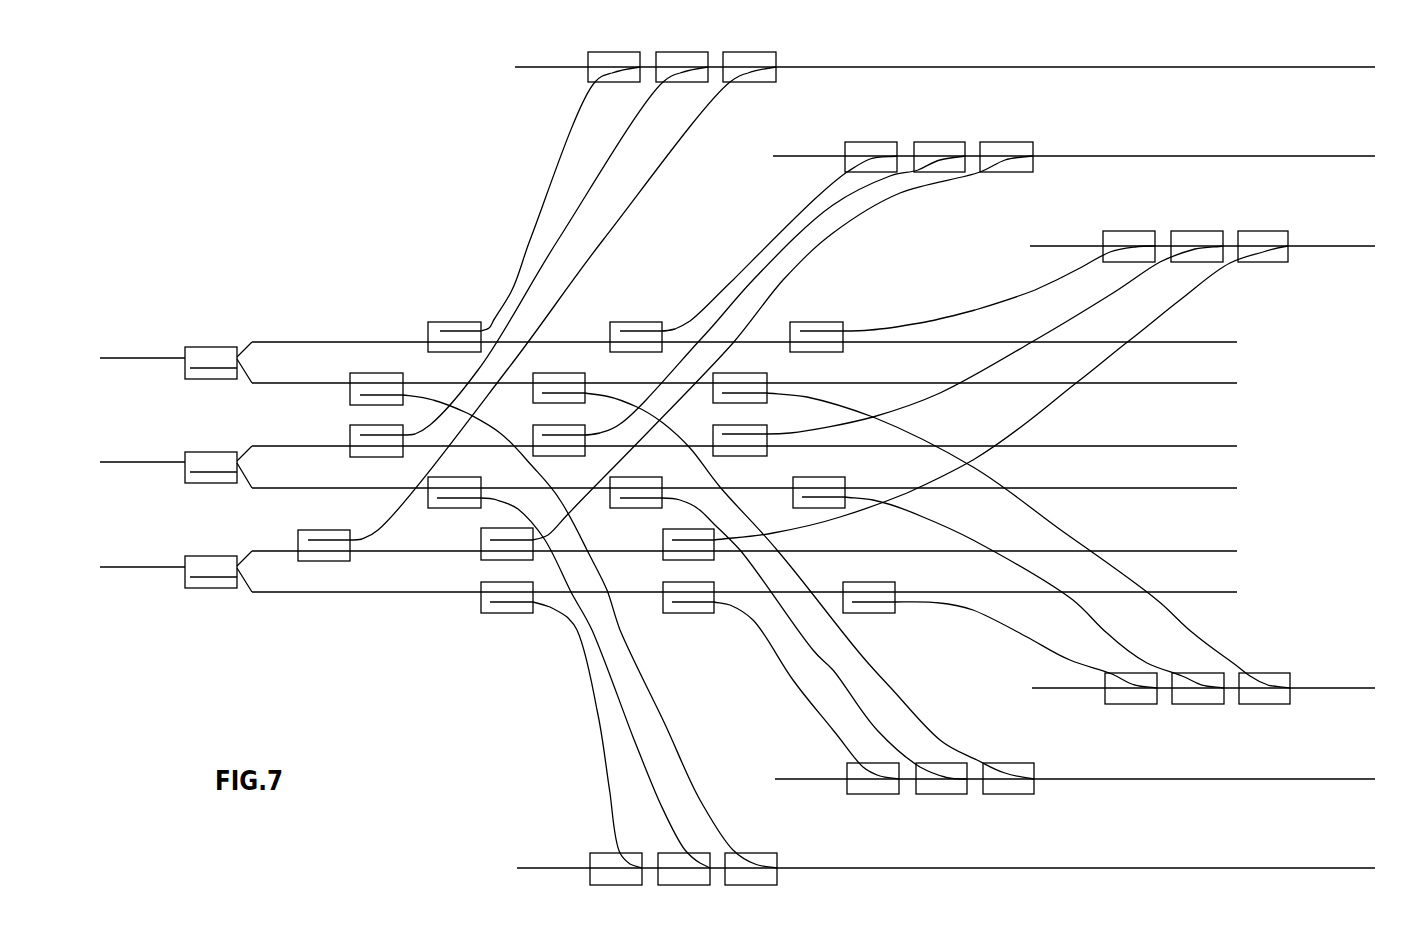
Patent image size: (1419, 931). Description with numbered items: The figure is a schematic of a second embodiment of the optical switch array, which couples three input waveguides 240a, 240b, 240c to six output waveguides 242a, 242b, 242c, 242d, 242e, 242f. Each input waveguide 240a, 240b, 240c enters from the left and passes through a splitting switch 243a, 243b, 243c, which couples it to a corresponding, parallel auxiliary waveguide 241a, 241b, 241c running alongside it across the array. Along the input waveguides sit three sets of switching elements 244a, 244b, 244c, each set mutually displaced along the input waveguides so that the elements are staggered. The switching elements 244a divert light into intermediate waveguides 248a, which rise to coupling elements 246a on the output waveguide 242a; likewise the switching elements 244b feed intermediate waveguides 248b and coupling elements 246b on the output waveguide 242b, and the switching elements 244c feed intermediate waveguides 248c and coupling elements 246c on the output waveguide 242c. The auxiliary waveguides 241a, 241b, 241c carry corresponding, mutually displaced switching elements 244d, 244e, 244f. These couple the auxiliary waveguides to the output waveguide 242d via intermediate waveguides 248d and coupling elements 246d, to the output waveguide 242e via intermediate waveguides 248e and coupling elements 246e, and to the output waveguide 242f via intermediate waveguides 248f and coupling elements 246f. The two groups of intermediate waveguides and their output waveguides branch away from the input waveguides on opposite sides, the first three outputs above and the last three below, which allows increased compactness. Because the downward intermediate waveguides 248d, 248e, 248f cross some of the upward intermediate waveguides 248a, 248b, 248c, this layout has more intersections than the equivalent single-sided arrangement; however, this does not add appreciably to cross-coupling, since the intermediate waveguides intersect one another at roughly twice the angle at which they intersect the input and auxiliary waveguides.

The input waveguide 240a is at (132, 357).
The input waveguide 240b is at (132, 461).
The input waveguide 240c is at (133, 566).
The splitting switch 243a is at (213, 346).
The splitting switch 243b is at (213, 451).
The splitting switch 243c is at (213, 555).
The auxiliary waveguide 241a is at (1237, 384).
The auxiliary waveguide 241b is at (1237, 489).
The auxiliary waveguide 241c is at (1237, 593).
The switching elements 244a is at (454, 321).
The switching elements 244b is at (639, 321).
The switching elements 244c is at (839, 321).
The switching elements 244d is at (766, 372).
The switching elements 244e is at (573, 371).
The switching elements 244f is at (400, 371).
The intermediate waveguides 248a is at (605, 233).
The intermediate waveguides 248b is at (865, 222).
The intermediate waveguides 248c is at (1158, 317).
The intermediate waveguides 248d is at (1195, 633).
The intermediate waveguides 248e is at (905, 703).
The intermediate waveguides 248f is at (660, 733).
The coupling elements 246a is at (743, 83).
The coupling elements 246b is at (1020, 142).
The coupling elements 246c is at (1270, 231).
The coupling elements 246d is at (1265, 705).
The coupling elements 246e is at (1030, 795).
The coupling elements 246f is at (745, 853).
The output waveguide 242a is at (1352, 70).
The output waveguide 242b is at (1352, 165).
The output waveguide 242c is at (1352, 252).
The output waveguide 242d is at (1355, 685).
The output waveguide 242e is at (1355, 776).
The output waveguide 242f is at (1355, 866).